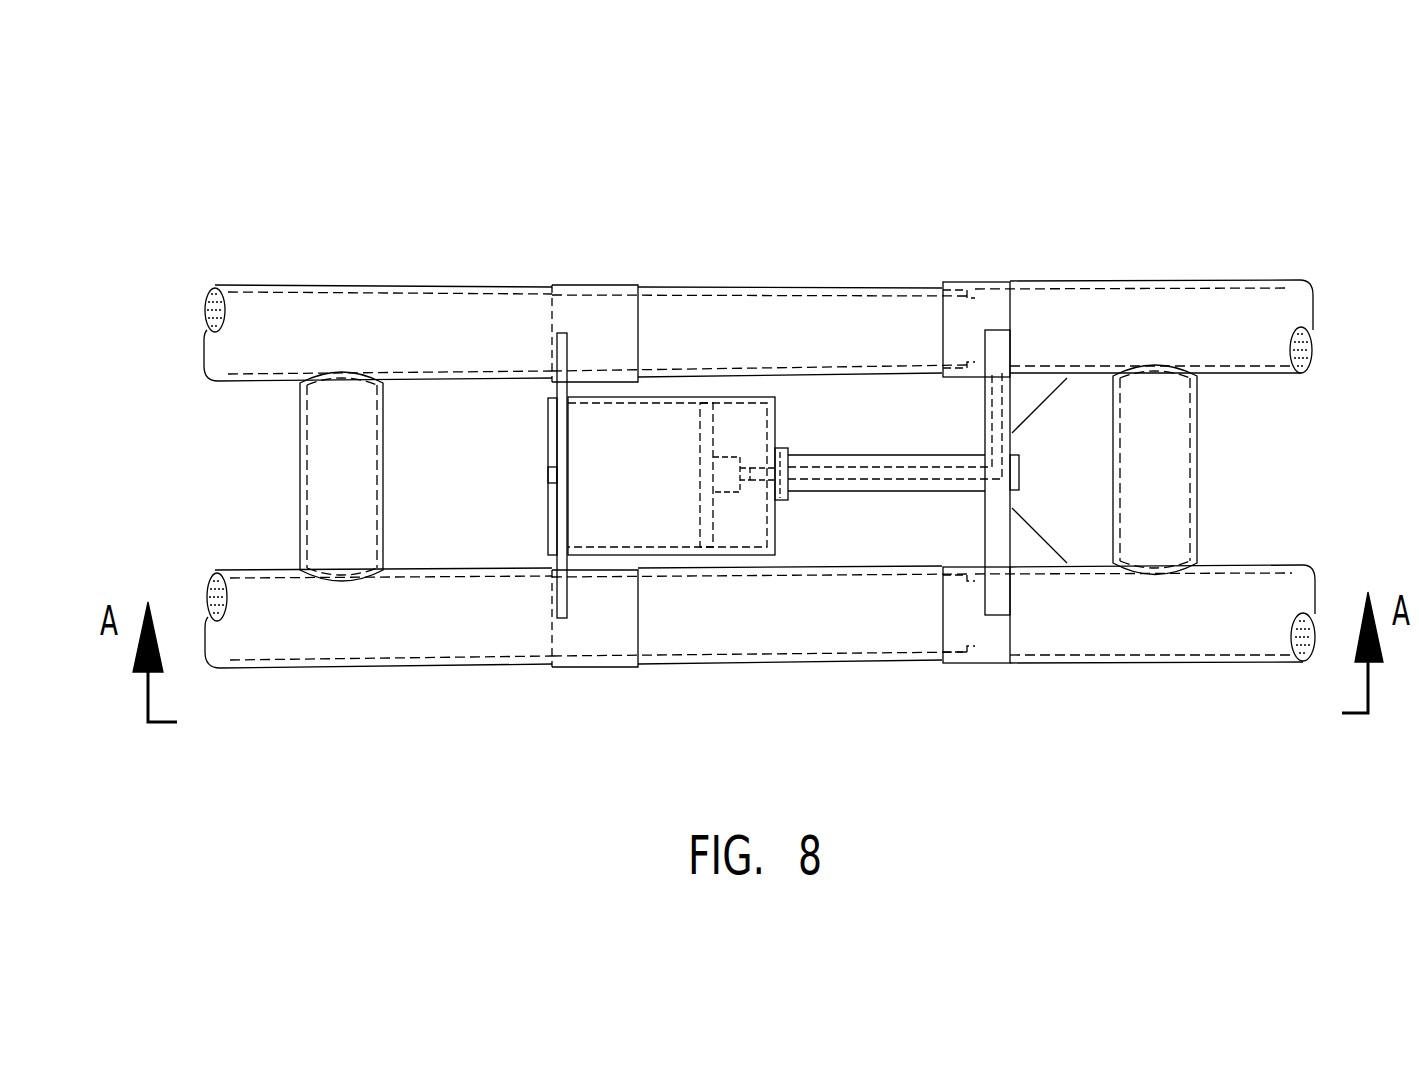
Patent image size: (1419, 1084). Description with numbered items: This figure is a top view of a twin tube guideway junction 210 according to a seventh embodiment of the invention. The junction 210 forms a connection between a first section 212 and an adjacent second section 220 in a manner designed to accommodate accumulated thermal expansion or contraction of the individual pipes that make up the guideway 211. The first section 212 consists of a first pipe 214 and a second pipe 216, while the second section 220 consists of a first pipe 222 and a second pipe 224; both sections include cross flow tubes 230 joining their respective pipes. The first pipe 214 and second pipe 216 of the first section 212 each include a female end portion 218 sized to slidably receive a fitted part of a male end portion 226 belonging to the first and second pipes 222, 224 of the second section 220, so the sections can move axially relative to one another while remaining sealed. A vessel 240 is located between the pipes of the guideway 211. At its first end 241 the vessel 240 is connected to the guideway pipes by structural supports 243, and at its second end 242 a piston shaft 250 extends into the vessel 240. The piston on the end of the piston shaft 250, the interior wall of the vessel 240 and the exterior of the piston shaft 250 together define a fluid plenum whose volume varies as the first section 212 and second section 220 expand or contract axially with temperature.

The twin tube guideway junction 210 is at (1114, 137).
The guideway 211 is at (165, 449).
The first section 212 is at (303, 244).
The first pipe 214 is at (253, 285).
The second pipe 216 is at (277, 672).
The female end portion 218 is at (638, 320).
The second section 220 is at (976, 249).
The first pipe 222 is at (1237, 278).
The second pipe 224 is at (1163, 663).
The male end portion 226 is at (690, 288).
The cross flow tube 230 is at (298, 460).
The vessel 240 is at (623, 396).
The first end 241 is at (512, 417).
The second end 242 is at (800, 413).
The structural support 243 is at (555, 348).
The piston shaft 250 is at (832, 492).